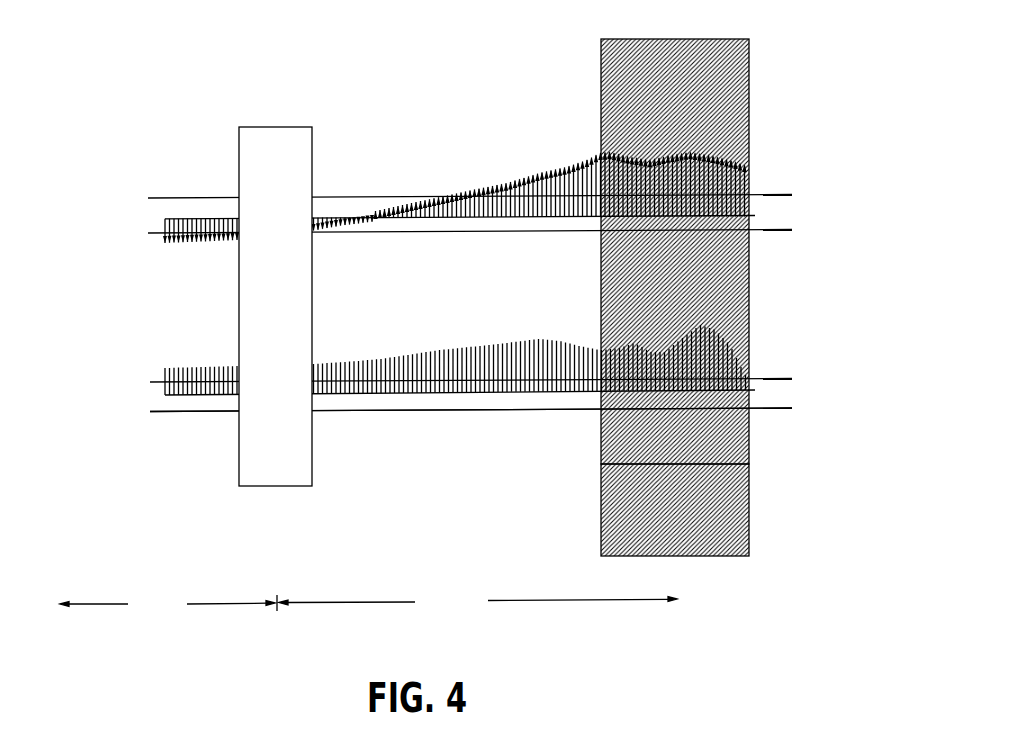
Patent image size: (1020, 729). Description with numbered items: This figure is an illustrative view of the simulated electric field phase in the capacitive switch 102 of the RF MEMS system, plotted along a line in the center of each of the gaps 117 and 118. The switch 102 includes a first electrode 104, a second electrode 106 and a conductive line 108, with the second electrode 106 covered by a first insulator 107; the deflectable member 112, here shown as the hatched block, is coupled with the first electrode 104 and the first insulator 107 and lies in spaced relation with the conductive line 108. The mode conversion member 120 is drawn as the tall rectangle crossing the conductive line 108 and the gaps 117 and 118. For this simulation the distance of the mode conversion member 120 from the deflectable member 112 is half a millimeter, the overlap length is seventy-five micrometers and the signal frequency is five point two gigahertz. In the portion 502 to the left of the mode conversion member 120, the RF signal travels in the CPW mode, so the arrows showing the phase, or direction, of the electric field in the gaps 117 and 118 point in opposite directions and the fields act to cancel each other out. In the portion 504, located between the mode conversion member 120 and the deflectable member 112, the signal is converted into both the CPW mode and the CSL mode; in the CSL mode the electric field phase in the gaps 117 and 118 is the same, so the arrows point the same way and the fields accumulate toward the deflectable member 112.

The capacitive switch 102 is at (791, 72).
The first electrode 104 is at (413, 150).
The second electrode 106 is at (415, 465).
The first insulator 107 is at (482, 432).
The conductive line 108 is at (413, 320).
The deflectable member 112 is at (687, 522).
The gap 117 is at (486, 197).
The gap 118 is at (481, 366).
The mode conversion member 120 is at (292, 320).
The portion 502 is at (168, 604).
The portion 504 is at (478, 602).